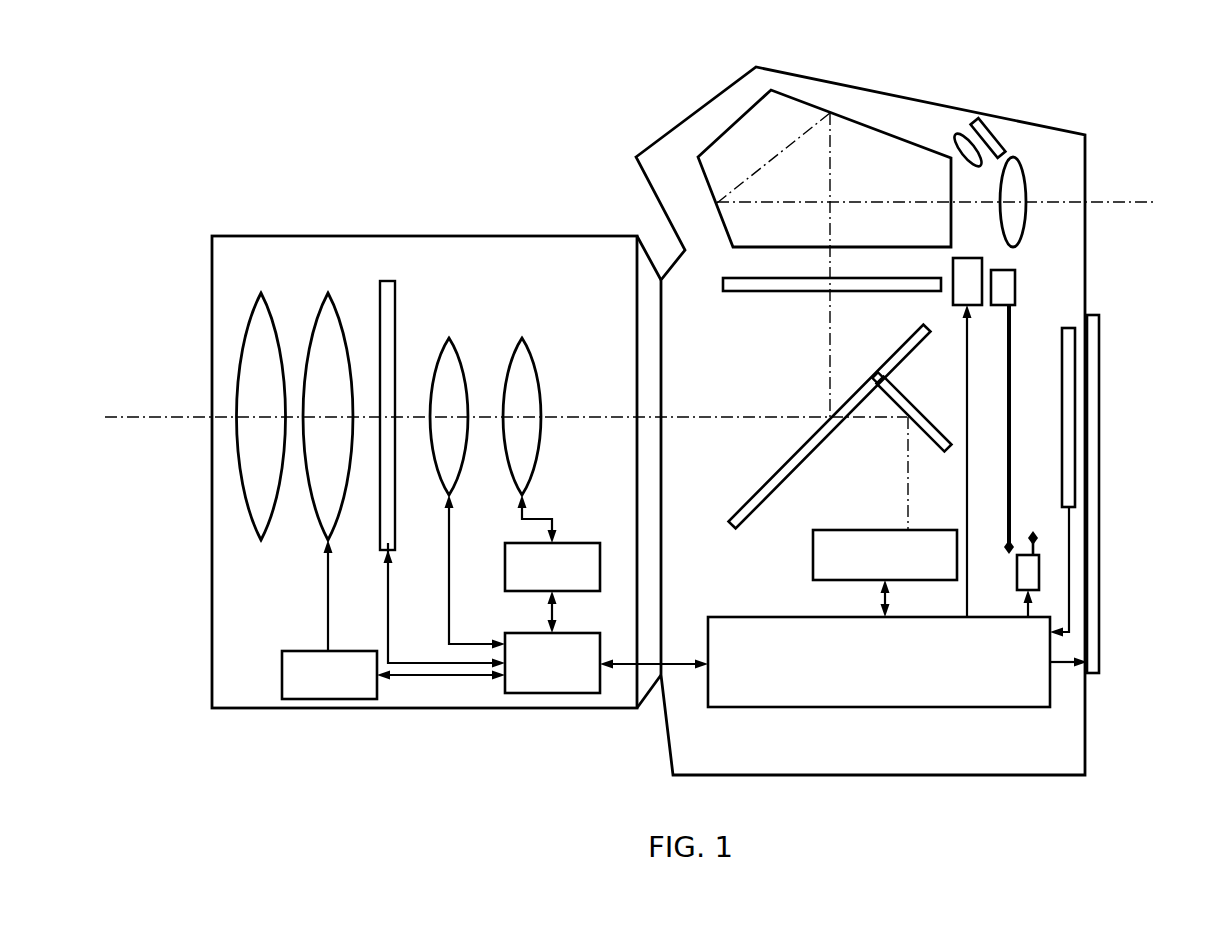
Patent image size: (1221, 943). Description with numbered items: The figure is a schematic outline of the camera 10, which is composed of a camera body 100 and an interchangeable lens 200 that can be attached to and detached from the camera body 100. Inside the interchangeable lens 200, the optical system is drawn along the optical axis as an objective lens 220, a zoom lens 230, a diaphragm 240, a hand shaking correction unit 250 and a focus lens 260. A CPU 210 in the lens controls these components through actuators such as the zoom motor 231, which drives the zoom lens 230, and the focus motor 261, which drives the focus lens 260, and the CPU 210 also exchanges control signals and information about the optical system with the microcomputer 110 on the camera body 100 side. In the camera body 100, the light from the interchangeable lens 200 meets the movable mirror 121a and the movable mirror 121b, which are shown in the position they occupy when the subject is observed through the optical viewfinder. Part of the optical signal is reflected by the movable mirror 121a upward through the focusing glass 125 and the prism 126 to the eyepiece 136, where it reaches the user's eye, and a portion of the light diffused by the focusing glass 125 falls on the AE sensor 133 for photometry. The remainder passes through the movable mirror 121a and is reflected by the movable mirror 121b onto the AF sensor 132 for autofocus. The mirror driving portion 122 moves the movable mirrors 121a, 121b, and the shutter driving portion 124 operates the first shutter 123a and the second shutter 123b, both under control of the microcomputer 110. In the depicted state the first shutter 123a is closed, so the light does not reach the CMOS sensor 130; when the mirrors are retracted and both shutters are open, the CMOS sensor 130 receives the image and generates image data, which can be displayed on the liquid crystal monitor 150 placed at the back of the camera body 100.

The camera 10 is at (1121, 162).
The camera body 100 is at (665, 135).
The interchangeable lens 200 is at (212, 312).
The microcomputer 110 is at (725, 618).
The movable mirror 121a is at (778, 467).
The movable mirror 121b is at (933, 418).
The mirror driving portion 122 is at (952, 297).
The first shutter 123a is at (1013, 342).
The second shutter 123b is at (1037, 540).
The shutter driving portion 124 is at (1015, 282).
The focusing glass 125 is at (765, 292).
The prism 126 is at (860, 108).
The CMOS sensor 130 is at (1062, 415).
The AF sensor 132 is at (832, 530).
The AE sensor 133 is at (1002, 135).
The eyepiece 136 is at (1025, 170).
The liquid crystal monitor 150 is at (1099, 485).
The CPU 210 is at (532, 633).
The objective lens 220 is at (259, 292).
The zoom lens 230 is at (327, 292).
The zoom motor 231 is at (308, 650).
The diaphragm 240 is at (386, 281).
The hand shaking correction unit 250 is at (449, 337).
The focus lens 260 is at (521, 337).
The focus motor 261 is at (565, 542).